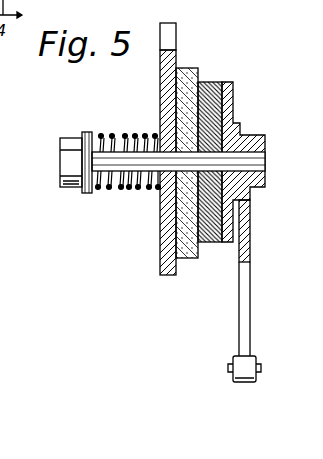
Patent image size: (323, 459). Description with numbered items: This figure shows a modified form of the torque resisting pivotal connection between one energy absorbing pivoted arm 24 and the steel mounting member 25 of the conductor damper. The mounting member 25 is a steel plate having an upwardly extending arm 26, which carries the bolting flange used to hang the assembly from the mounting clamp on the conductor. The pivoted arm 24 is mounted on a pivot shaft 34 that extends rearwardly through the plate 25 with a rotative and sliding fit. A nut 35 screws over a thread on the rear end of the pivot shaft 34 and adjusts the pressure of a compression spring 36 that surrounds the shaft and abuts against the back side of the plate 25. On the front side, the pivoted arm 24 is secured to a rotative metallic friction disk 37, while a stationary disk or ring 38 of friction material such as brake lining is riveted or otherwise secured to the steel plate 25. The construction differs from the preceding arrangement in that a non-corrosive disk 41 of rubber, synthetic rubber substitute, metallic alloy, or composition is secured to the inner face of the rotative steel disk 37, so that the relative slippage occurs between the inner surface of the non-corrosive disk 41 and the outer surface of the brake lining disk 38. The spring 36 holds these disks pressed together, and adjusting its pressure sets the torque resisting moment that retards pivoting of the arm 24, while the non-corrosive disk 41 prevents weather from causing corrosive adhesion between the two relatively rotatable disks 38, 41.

The energy absorbing pivoted arm 24 is at (247, 320).
The mounting member 25 is at (171, 80).
The upwardly extending arm 26 is at (174, 36).
The pivot shaft 34 is at (258, 160).
The nut 35 is at (68, 158).
The compression spring 36 is at (124, 134).
The metallic friction disk 37 is at (226, 105).
The disk of friction material 38 is at (189, 70).
The non-corrosive disk 41 is at (210, 86).